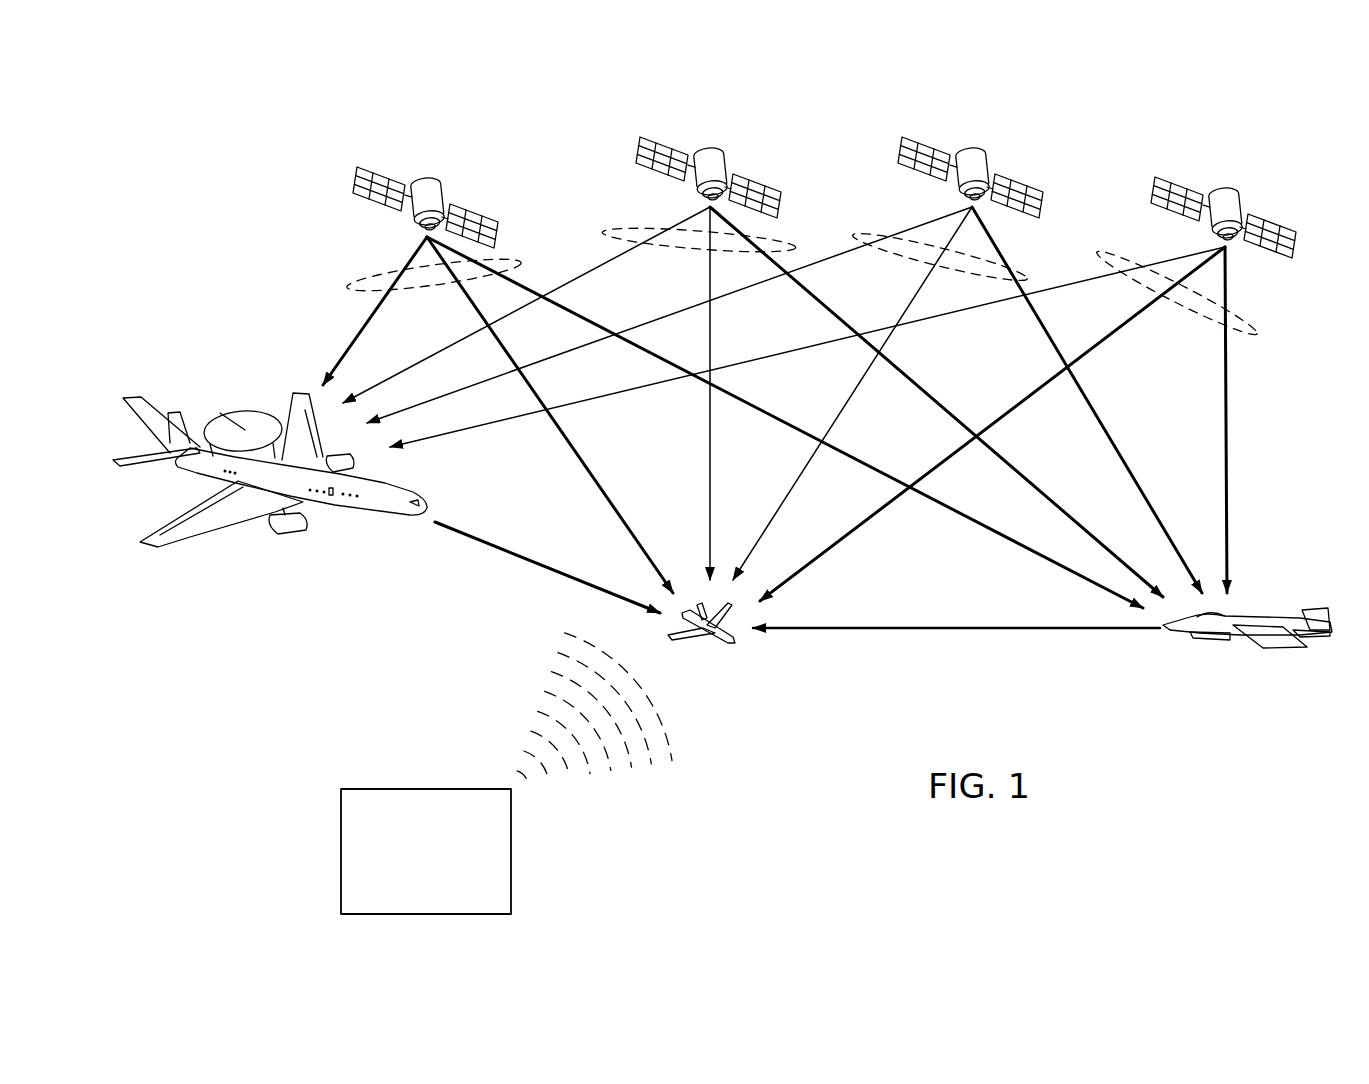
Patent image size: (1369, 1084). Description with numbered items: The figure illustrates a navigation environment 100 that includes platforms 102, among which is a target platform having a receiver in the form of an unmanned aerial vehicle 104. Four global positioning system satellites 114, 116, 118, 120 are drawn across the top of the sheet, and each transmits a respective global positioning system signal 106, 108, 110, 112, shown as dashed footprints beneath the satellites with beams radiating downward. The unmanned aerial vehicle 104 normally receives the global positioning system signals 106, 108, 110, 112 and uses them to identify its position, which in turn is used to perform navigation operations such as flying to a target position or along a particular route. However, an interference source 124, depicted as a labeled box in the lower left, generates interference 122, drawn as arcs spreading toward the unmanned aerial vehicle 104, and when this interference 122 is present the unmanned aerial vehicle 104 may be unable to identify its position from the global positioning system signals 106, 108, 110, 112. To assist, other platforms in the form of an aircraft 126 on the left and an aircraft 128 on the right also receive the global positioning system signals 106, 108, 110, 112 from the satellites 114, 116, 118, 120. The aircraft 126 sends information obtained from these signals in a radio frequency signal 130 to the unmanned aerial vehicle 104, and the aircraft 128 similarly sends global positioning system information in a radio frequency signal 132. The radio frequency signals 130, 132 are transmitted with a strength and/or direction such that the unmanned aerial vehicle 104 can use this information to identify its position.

The navigation environment 100 is at (200, 172).
The platforms 102 is at (1280, 173).
The unmanned aerial vehicle 104 is at (733, 645).
The global positioning system signal 106 is at (348, 288).
The global positioning system signal 108 is at (605, 234).
The global positioning system signal 110 is at (1028, 278).
The global positioning system signal 112 is at (1258, 335).
The global positioning system satellite 114 is at (428, 182).
The global positioning system satellite 116 is at (709, 152).
The global positioning system satellite 118 is at (975, 152).
The global positioning system satellite 120 is at (1230, 192).
The interference 122 is at (672, 733).
The interference source 124 is at (405, 896).
The aircraft 126 is at (135, 398).
The aircraft 128 is at (1250, 640).
The radio frequency signal 130 is at (547, 572).
The radio frequency signal 132 is at (956, 655).